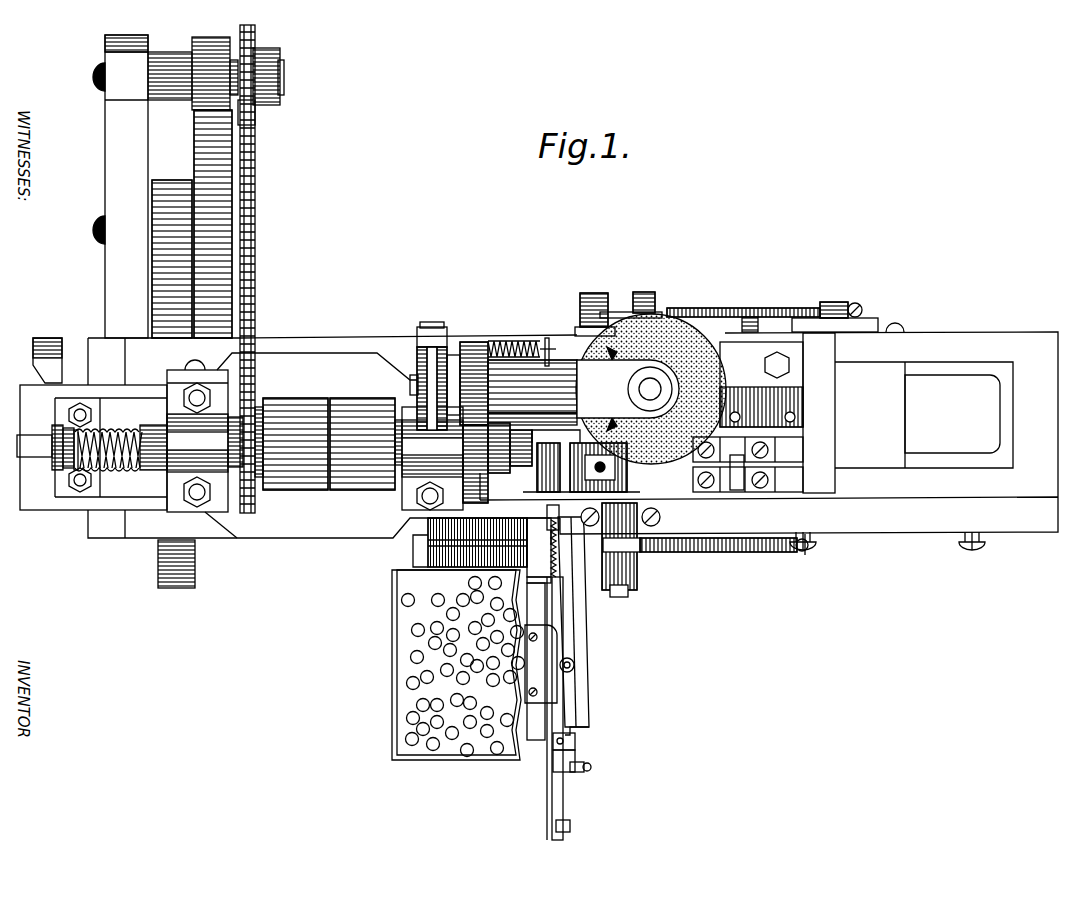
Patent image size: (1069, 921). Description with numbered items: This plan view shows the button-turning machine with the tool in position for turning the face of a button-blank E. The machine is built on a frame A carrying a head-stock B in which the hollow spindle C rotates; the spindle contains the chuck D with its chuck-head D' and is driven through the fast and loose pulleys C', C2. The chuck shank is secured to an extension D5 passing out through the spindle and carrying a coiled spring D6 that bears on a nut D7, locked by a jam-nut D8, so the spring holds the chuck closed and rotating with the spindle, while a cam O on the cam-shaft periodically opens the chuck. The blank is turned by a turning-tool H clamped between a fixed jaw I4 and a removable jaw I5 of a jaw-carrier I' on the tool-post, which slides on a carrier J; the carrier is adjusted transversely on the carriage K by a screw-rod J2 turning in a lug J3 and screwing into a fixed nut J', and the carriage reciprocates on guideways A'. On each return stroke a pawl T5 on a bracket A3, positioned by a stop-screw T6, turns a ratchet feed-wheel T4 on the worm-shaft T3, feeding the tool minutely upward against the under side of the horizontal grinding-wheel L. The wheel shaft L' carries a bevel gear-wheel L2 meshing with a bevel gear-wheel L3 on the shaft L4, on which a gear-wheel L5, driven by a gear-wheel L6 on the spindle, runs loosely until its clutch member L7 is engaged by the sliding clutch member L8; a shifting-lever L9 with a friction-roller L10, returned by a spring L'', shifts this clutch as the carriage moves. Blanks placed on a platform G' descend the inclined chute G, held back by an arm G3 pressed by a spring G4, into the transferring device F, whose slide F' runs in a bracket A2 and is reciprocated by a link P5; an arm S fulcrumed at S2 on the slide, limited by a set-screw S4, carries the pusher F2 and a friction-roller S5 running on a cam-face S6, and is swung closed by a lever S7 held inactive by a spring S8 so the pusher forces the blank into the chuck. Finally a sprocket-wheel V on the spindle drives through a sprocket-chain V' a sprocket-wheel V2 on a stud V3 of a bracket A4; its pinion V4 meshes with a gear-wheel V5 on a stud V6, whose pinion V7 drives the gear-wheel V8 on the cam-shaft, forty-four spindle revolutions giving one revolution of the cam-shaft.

The frame A is at (573, 425).
The guideways A' is at (809, 425).
The bracket A2 is at (535, 735).
The bracket A3 is at (888, 325).
The bracket A4 is at (112, 160).
The head-stock B is at (315, 436).
The hollow spindle C is at (93, 447).
The fast pulley C' is at (295, 465).
The loose pulley C2 is at (355, 492).
The chuck D is at (510, 461).
The chuck-head D' is at (26, 449).
The extension D5 is at (138, 432).
The spring D6 is at (112, 432).
The nut D7 is at (70, 462).
The jam-nut D8 is at (60, 458).
The button-blank E is at (412, 655).
The transferring device F is at (590, 715).
The slide F' is at (537, 708).
The pusher F2 is at (558, 532).
The chute G is at (404, 551).
The platform G' is at (438, 665).
The arm G3 is at (522, 528).
The spring G4 is at (556, 555).
The turning-tool H is at (544, 467).
The jaw-carrier I' is at (556, 431).
The jaw I4 is at (560, 493).
The jaw I5 is at (600, 478).
The carrier J is at (761, 384).
The fixed nut J' is at (748, 449).
The screw-rod J2 is at (768, 480).
The lug J3 is at (735, 480).
The carriage K is at (825, 402).
The grinding-wheel L is at (651, 373).
The shaft L' is at (639, 389).
The bevel gear-wheel L2 is at (650, 345).
The bevel gear-wheel L3 is at (612, 362).
The shaft L4 is at (410, 376).
The gear-wheel L5 is at (532, 392).
The gear-wheel L6 is at (466, 460).
The clutch member L7 is at (468, 345).
The clutch member L8 is at (420, 352).
The shifting-lever L9 is at (434, 332).
The friction-roller L10 is at (580, 328).
The spring L'' is at (522, 335).
The cam O is at (48, 340).
The link P5 is at (565, 810).
The arm S is at (590, 625).
The fulcrum S2 is at (572, 742).
The set-screw S4 is at (590, 768).
The friction-roller S5 is at (576, 666).
The cam-face S6 is at (541, 664).
The lever S7 is at (637, 560).
The spring S8 is at (720, 552).
The worm-shaft T3 is at (748, 334).
The ratchet feed-wheel T4 is at (712, 312).
The pawl T5 is at (832, 306).
The stop-screw T6 is at (862, 312).
The sprocket-wheel V is at (252, 469).
The sprocket-chain V' is at (262, 269).
The sprocket-wheel V2 is at (256, 118).
The stud V3 is at (283, 80).
The pinion V4 is at (195, 42).
The gear-wheel V5 is at (220, 238).
The stud V6 is at (103, 232).
The pinion V7 is at (170, 182).
The gear-wheel V8 is at (152, 328).